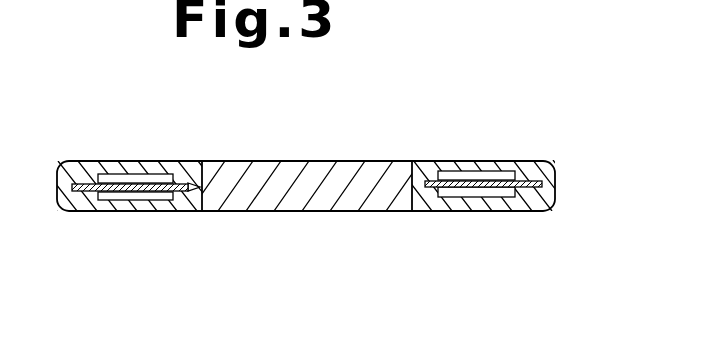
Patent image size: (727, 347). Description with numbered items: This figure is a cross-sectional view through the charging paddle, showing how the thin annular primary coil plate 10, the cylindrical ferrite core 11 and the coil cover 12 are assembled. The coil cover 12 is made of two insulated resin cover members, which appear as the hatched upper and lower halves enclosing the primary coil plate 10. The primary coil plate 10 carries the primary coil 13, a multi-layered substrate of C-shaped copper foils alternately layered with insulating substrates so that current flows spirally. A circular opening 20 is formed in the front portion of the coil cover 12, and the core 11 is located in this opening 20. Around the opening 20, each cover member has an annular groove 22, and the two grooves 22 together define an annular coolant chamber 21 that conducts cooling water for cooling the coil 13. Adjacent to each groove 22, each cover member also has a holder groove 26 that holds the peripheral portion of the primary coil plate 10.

The primary coil plate 10 is at (67, 163).
The ferrite core 11 is at (320, 161).
The coil cover 12 is at (550, 160).
The primary coil 13 is at (95, 168).
The circular opening 20 is at (206, 161).
The coolant chamber 21 is at (152, 193).
The annular groove 22 is at (465, 175).
The holder groove 26 is at (424, 172).